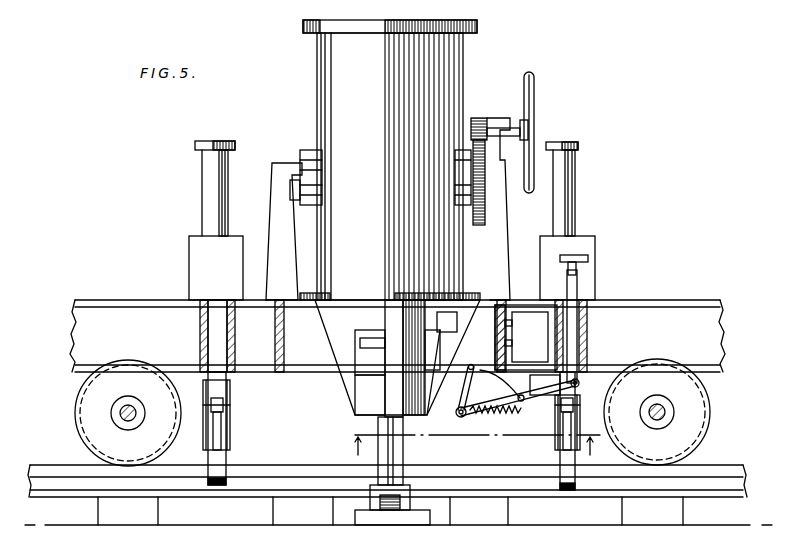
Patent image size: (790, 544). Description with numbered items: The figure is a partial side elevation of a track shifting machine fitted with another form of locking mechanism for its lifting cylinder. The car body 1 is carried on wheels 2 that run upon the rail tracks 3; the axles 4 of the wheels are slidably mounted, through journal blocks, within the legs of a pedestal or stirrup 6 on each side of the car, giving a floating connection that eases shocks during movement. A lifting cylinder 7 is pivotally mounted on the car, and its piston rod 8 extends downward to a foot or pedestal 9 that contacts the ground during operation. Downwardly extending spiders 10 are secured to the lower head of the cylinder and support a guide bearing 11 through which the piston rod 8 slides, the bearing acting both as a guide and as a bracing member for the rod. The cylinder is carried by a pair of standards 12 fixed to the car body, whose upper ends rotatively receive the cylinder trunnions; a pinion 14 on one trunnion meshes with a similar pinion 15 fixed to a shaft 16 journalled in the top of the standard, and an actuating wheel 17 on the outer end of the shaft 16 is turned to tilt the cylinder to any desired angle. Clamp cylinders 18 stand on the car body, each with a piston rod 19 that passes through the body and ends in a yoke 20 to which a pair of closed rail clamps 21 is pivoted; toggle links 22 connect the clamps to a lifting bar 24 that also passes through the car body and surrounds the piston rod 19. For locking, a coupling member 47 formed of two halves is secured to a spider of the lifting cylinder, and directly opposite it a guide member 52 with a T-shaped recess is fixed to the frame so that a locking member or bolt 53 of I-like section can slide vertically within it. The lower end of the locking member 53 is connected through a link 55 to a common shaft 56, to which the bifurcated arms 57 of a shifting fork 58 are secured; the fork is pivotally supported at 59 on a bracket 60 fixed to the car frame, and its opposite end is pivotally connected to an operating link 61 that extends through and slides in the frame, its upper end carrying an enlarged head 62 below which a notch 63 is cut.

The body 1 is at (112, 300).
The wheels 2 is at (72, 418).
The rail tracks 3 is at (290, 468).
The axles 4 is at (134, 421).
The pedestal or stirrup 6 is at (476, 452).
The lifting cylinder 7 is at (317, 78).
The piston rod 8 is at (398, 454).
The foot or pedestal 9 is at (379, 522).
The spiders 10 is at (333, 337).
The guide bearing 11 is at (365, 404).
The standards 12 is at (275, 215).
The pinion 14 is at (477, 225).
The pinion 15 is at (478, 118).
The shaft 16 is at (505, 128).
The actuating wheel 17 is at (533, 101).
The clamp cylinders 18 is at (208, 182).
The piston rod 19 is at (211, 402).
The yoke 20 is at (230, 437).
The rail clamps 21 is at (208, 457).
The toggle links 22 is at (230, 401).
The lifting bar 24 is at (215, 331).
The coupling member 47 is at (452, 340).
The guide member 52 is at (502, 333).
The locking member or bolt 53 is at (500, 350).
The link 55 is at (460, 393).
The common shaft 56 is at (461, 418).
The bifurcated arms 57 is at (495, 417).
The shifting fork 58 is at (580, 383).
The pivot 59 is at (521, 401).
The bracket 60 is at (530, 382).
The operating link 61 is at (580, 292).
The enlarged head 62 is at (575, 257).
The notch 63 is at (568, 272).